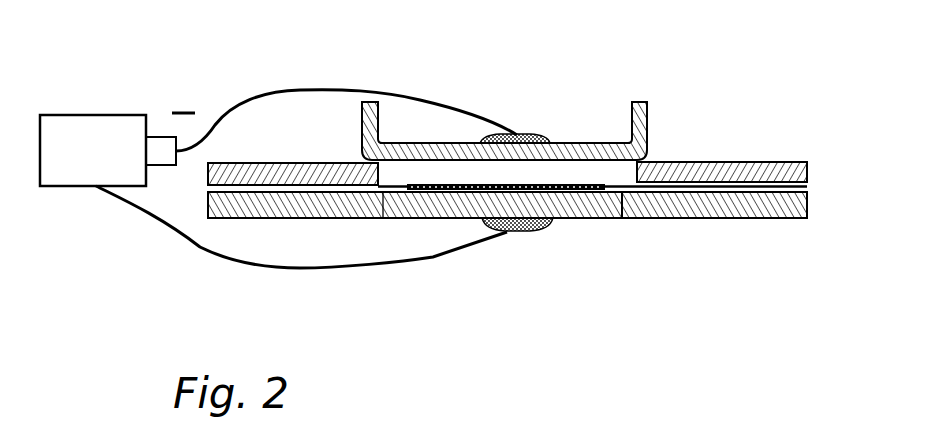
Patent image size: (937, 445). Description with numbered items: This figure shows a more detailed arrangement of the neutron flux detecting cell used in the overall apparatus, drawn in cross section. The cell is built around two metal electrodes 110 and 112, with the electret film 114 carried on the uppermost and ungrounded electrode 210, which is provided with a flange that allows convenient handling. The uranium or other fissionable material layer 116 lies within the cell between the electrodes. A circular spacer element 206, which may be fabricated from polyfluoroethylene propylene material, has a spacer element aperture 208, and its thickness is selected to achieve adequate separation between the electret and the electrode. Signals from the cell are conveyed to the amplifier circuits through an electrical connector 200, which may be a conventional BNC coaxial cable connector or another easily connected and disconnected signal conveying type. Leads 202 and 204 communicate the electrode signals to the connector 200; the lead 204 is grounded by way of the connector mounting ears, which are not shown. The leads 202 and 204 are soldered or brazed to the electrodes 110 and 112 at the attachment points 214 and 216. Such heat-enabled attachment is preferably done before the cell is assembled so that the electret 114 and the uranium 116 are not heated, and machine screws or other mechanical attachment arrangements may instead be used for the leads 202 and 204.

The metal electrode 110 is at (452, 142).
The metal electrode 112 is at (807, 200).
The electret film 114 is at (397, 165).
The fissionable material layer 116 is at (587, 183).
The electrical connector 200 is at (58, 188).
The lead 202 is at (285, 90).
The lead 204 is at (257, 266).
The circular spacer element 206 is at (302, 164).
The spacer element aperture 208 is at (622, 186).
The uppermost ungrounded electrode 210 is at (648, 130).
The solder or braze attachment 214 is at (537, 135).
The solder or braze attachment 216 is at (550, 223).